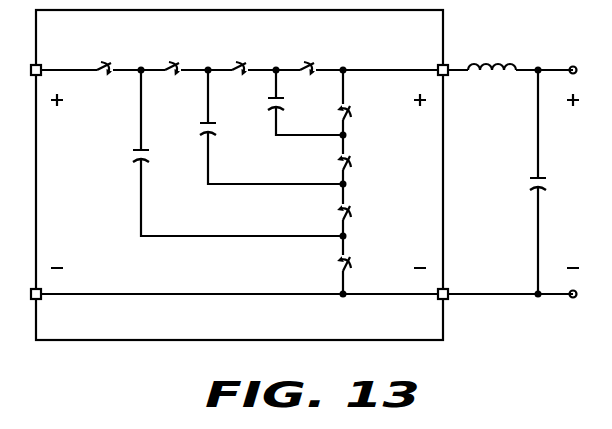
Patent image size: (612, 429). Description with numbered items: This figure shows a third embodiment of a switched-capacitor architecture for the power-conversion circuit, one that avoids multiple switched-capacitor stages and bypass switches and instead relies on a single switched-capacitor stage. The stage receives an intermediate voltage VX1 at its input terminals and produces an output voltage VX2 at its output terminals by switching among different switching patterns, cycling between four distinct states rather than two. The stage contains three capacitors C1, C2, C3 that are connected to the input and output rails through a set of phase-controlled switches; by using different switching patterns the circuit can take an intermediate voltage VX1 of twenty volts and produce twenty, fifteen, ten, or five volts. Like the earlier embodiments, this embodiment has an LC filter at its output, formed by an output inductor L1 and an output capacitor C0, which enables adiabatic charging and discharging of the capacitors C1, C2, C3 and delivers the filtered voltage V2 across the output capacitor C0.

The capacitor C1 is at (291, 102).
The capacitor C2 is at (259, 127).
The capacitor C3 is at (224, 153).
The output capacitor C0 is at (523, 182).
The output inductor L1 is at (492, 55).
The intermediate voltage VX1 is at (59, 183).
The output voltage VX2 is at (415, 183).
The output voltage V2 is at (573, 183).